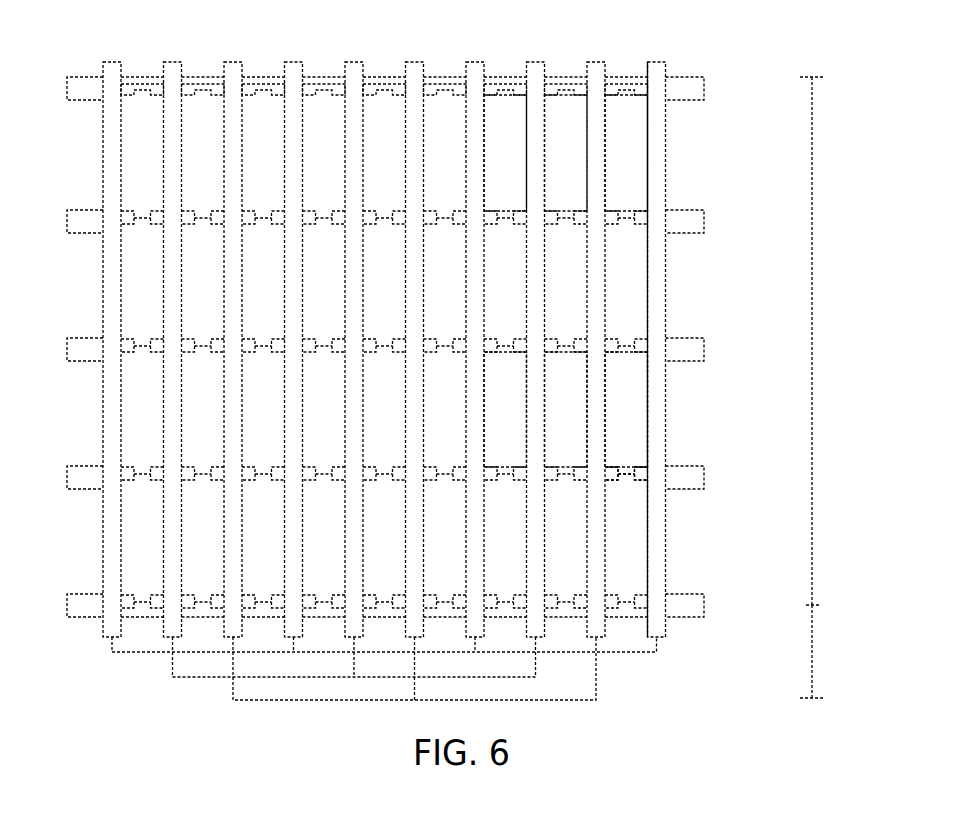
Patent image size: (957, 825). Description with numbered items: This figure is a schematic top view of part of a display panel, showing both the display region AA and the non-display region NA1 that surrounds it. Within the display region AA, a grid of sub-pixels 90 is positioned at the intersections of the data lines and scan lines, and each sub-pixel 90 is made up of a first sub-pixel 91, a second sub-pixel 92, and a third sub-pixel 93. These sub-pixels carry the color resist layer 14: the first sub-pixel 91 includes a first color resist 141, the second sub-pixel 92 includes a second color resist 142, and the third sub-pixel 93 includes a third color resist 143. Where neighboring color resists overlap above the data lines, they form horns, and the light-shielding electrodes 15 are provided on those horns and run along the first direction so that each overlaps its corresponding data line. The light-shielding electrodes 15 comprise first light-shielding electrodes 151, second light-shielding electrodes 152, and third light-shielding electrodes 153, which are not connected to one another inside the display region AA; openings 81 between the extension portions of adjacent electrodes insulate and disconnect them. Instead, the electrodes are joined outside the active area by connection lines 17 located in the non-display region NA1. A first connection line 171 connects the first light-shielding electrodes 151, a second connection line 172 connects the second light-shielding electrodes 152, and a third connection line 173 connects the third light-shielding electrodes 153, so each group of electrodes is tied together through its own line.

The color resist layer 14 is at (647, 153).
The first color resists 141 is at (505, 147).
The second color resists 142 is at (560, 187).
The third color resists 143 is at (623, 201).
The light-shielding electrodes 15 is at (663, 349).
The first light-shielding electrodes 151 is at (537, 267).
The second light-shielding electrodes 152 is at (598, 280).
The third light-shielding electrodes 153 is at (657, 308).
The sub-pixels 90 is at (637, 409).
The first sub-pixel 91 is at (502, 380).
The second sub-pixel 92 is at (568, 407).
The third sub-pixel 93 is at (618, 421).
The openings 81 is at (627, 473).
The connection lines 17 is at (461, 636).
The first connection line 171 is at (513, 675).
The second connection line 172 is at (557, 700).
The third connection line 173 is at (502, 651).
The display region AA is at (826, 341).
The non-display region NA1 is at (830, 651).